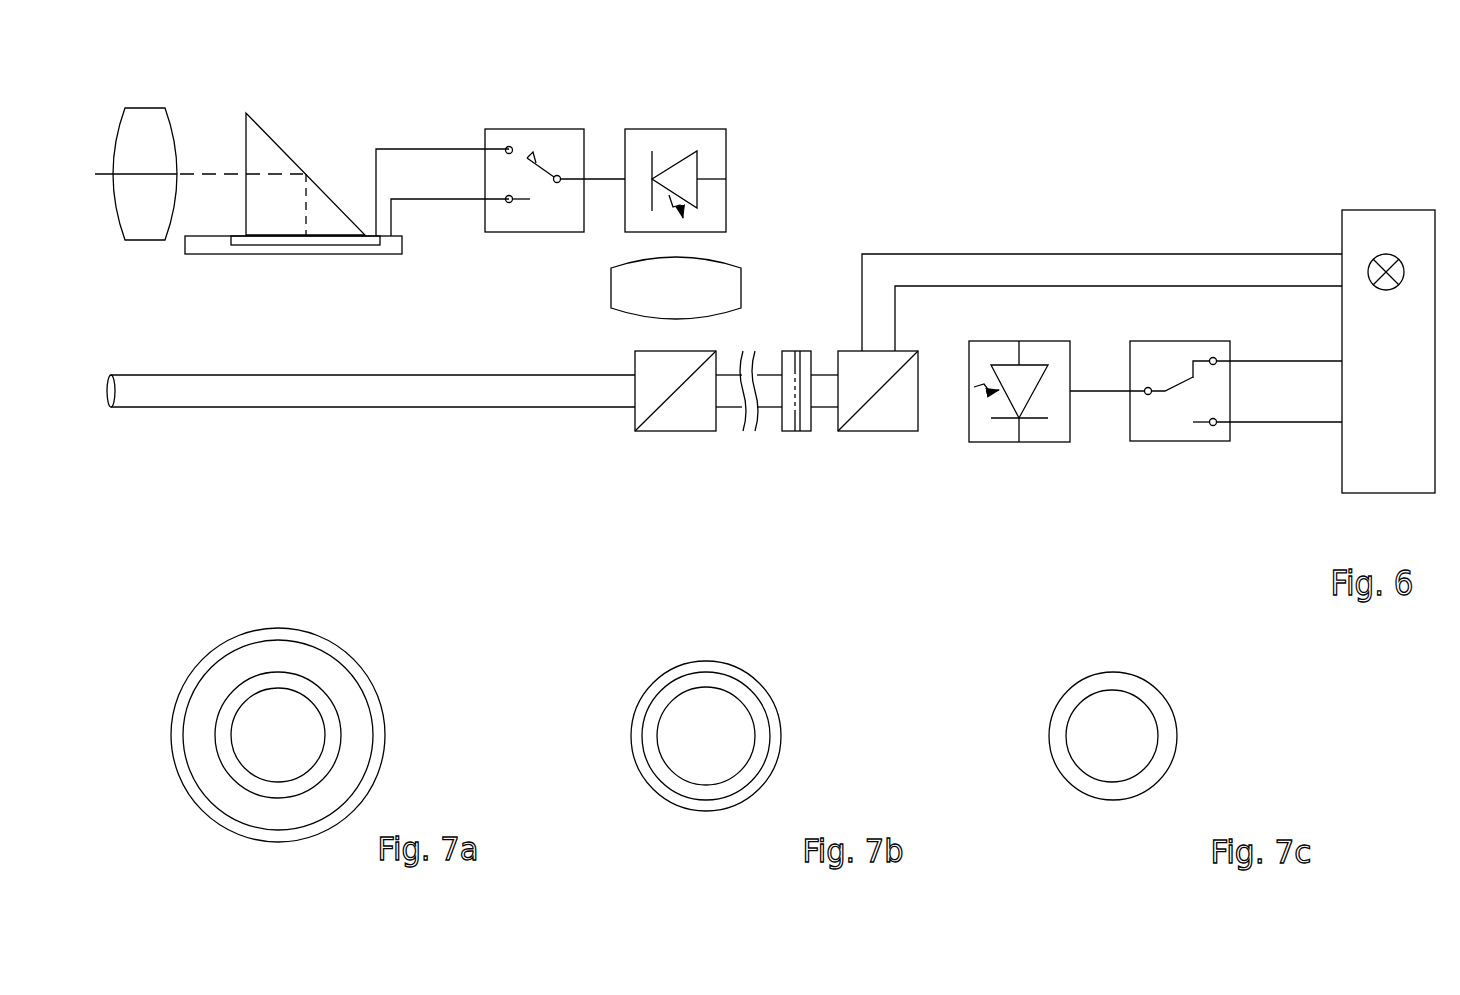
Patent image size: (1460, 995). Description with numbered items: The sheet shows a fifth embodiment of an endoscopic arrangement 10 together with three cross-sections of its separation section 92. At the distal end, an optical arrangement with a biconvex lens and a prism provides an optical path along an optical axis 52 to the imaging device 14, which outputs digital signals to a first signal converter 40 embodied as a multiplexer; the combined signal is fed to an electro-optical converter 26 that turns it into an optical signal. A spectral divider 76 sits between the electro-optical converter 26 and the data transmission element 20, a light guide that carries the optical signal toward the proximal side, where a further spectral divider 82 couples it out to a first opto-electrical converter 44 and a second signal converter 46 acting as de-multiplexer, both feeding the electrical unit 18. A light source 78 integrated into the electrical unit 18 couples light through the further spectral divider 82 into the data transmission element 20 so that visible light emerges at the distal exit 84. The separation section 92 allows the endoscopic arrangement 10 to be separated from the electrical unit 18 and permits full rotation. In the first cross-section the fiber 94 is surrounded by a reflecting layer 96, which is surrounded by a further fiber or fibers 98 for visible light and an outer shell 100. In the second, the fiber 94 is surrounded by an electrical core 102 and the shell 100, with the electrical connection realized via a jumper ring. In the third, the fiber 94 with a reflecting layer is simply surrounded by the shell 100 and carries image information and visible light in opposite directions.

In FIG. 6, the endoscopic arrangement 10 is at (928, 197).
In FIG. 6, the imaging device 14 is at (318, 254).
In FIG. 6, the electrical unit 18 is at (1376, 372).
In FIG. 6, the data transmission element 20 is at (771, 348).
In FIG. 7A, the data transmission element 20 is at (184, 640).
In FIG. 7B, the data transmission element 20 is at (632, 673).
In FIG. 7C, the data transmission element 20 is at (1039, 670).
In FIG. 6, the electro-optical converter 26 is at (668, 128).
In FIG. 6, the first signal converter 40 is at (537, 128).
In FIG. 6, the first opto-electrical converter 44 is at (1003, 443).
In FIG. 6, the second signal converter 46 is at (1193, 443).
In FIG. 6, the optical axis 52 is at (207, 173).
In FIG. 6, the spectral divider 76 is at (700, 433).
In FIG. 6, the light source 78 is at (1383, 254).
In FIG. 6, the further spectral divider 82 is at (855, 433).
In FIG. 6, the exit for visible light 84 is at (139, 351).
In FIG. 6, the separation section 92 is at (800, 451).
In FIG. 7A, the separation section 92 is at (364, 625).
In FIG. 7B, the separation section 92 is at (740, 655).
In FIG. 7C, the separation section 92 is at (1145, 655).
In FIG. 7A, the fiber 94 is at (280, 775).
In FIG. 7B, the fiber 94 is at (705, 775).
In FIG. 7C, the fiber 94 is at (1110, 743).
In FIG. 7A, the reflecting layer 96 is at (330, 753).
In FIG. 7A, the further fiber or fibers 98 is at (357, 720).
In FIG. 7A, the shell 100 is at (357, 668).
In FIG. 7B, the shell 100 is at (723, 668).
In FIG. 7C, the shell 100 is at (1129, 683).
In FIG. 7B, the electrical core 102 is at (757, 753).